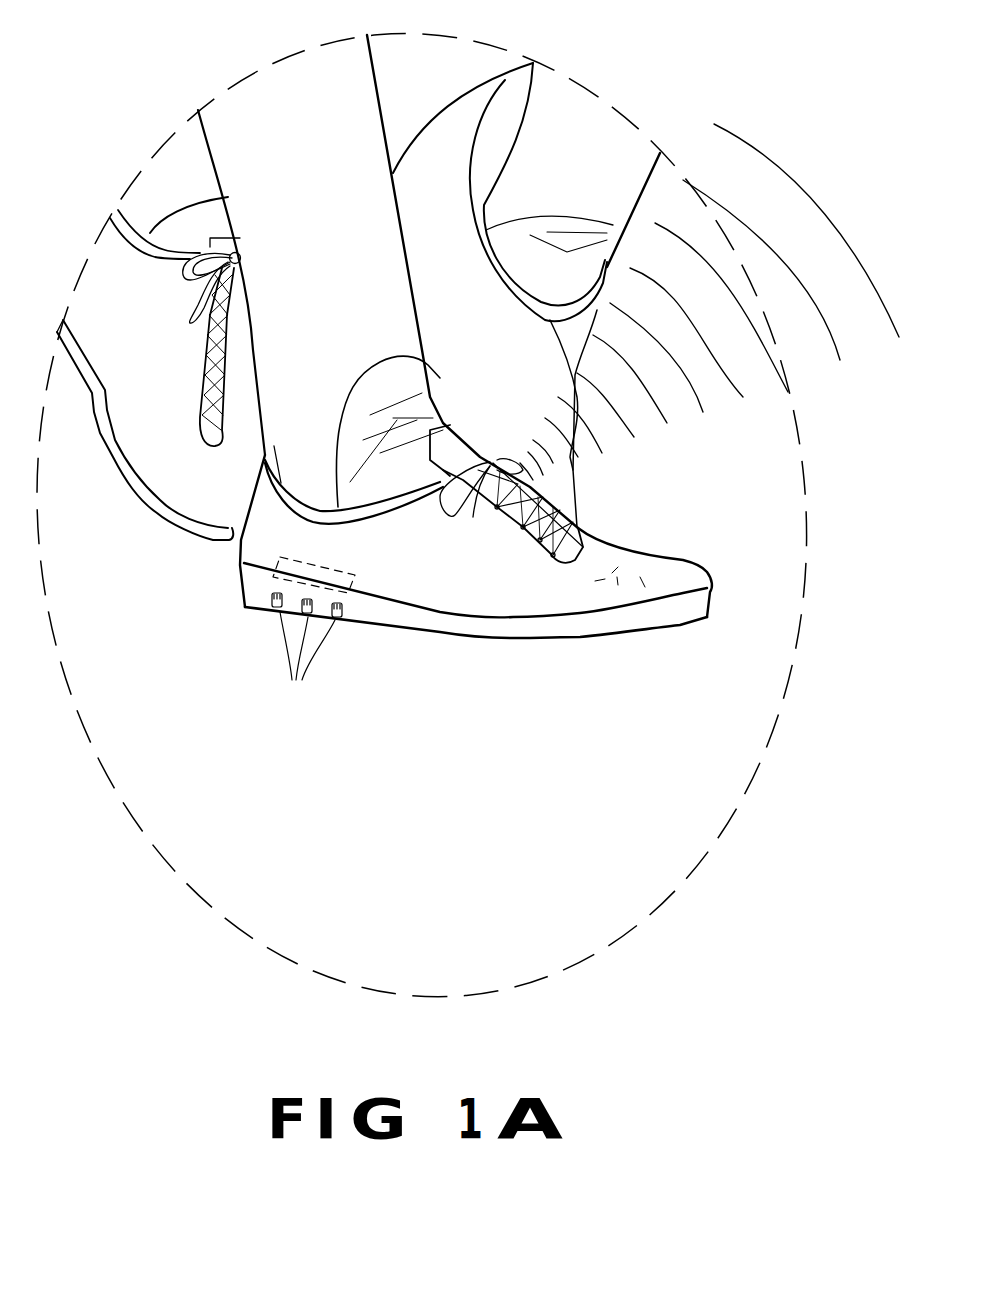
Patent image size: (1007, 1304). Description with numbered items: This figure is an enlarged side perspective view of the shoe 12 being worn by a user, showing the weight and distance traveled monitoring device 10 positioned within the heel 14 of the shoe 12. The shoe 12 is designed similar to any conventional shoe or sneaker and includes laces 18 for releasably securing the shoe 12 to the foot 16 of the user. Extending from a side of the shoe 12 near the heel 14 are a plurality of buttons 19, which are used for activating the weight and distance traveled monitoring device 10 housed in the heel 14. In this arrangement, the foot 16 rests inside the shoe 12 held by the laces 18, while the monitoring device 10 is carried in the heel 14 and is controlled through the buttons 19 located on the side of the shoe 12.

The weight and distance traveled monitoring device 10 is at (627, 647).
The shoe 12 is at (240, 543).
The heel 14 is at (246, 606).
The foot 16 is at (417, 470).
The laces 18 is at (512, 468).
The buttons 19 is at (313, 639).